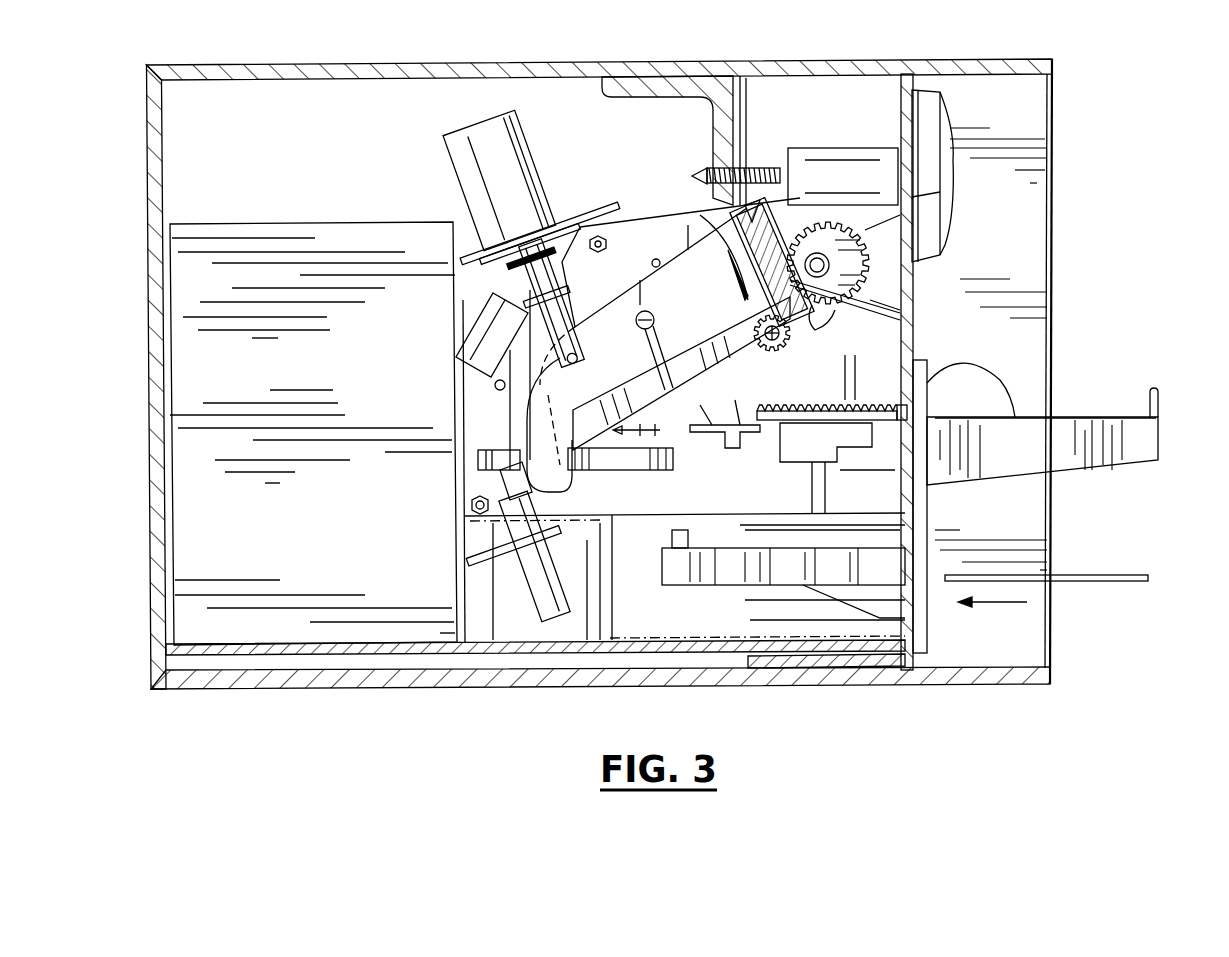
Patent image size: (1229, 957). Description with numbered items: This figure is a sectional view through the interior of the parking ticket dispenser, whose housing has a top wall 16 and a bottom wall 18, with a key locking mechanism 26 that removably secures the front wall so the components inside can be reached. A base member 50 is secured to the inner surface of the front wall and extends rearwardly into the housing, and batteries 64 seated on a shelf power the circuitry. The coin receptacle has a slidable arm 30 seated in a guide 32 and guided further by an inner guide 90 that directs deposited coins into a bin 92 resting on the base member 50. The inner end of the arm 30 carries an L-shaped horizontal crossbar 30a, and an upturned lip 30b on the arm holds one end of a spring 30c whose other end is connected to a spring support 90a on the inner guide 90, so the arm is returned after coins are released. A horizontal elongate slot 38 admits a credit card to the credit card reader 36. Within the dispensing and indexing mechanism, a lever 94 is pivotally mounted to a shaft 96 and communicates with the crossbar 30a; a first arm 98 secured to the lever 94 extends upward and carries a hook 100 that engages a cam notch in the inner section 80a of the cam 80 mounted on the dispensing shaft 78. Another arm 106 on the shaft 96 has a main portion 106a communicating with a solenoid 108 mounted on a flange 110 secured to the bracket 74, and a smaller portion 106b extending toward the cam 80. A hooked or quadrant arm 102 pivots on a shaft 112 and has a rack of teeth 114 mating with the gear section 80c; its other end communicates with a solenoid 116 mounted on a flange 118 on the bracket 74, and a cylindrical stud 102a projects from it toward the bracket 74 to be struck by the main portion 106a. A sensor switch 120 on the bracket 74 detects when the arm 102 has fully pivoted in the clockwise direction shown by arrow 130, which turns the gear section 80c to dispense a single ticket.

The top wall 16 is at (335, 65).
The bottom wall 18 is at (680, 672).
The key locking mechanism 26 is at (945, 118).
The slidable arm 30 is at (1158, 400).
The L-shaped horizontal crossbar 30a is at (620, 476).
The upturned lip 30b is at (725, 452).
The spring 30c is at (880, 422).
The guide 32 is at (1082, 458).
The credit card reader 36 is at (918, 520).
The horizontal elongate slot 38 is at (918, 590).
The base member 50 is at (467, 655).
The batteries 64 is at (238, 235).
The bracket 74 is at (602, 283).
The dispensing shaft 78 is at (830, 262).
The cam 80 is at (868, 283).
The inner section 80a is at (870, 228).
The gear section 80c is at (828, 318).
The inner guide 90 is at (812, 470).
The spring support 90a is at (940, 375).
The bin 92 is at (642, 590).
The lever 94 is at (700, 396).
The shaft 96 is at (790, 345).
The first arm 98 is at (742, 295).
The hook 100 is at (843, 176).
The hooked or quadrant arm 102 is at (691, 305).
The cylindrical stud 102a is at (600, 348).
The arm 106 is at (565, 416).
The main portion 106a is at (518, 445).
The smaller portion 106b is at (870, 318).
The solenoid 108 is at (515, 560).
The flange 110 is at (470, 540).
The shaft 112 is at (645, 318).
The rack of teeth 114 is at (768, 168).
The solenoid 116 is at (465, 170).
The flange 118 is at (565, 222).
The sensor switch 120 is at (470, 325).
The arrow 130 is at (720, 225).